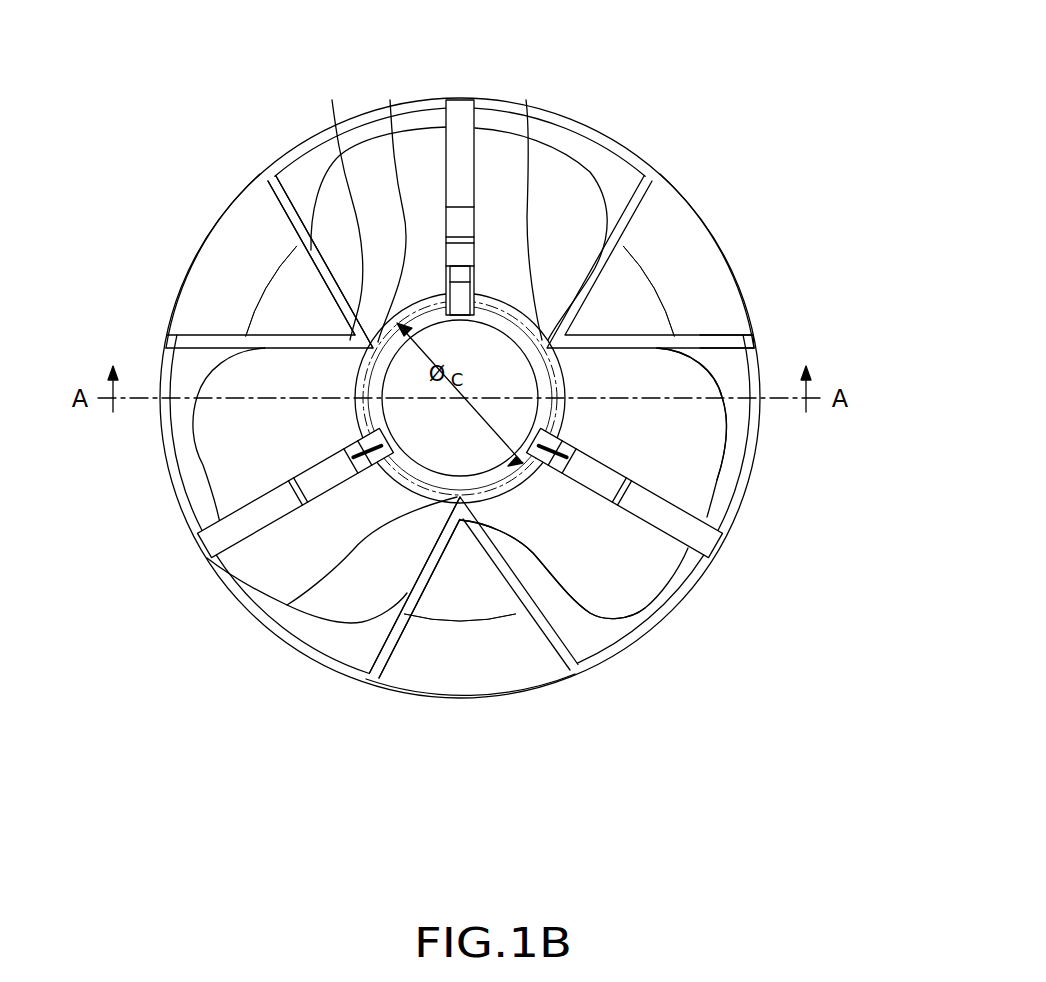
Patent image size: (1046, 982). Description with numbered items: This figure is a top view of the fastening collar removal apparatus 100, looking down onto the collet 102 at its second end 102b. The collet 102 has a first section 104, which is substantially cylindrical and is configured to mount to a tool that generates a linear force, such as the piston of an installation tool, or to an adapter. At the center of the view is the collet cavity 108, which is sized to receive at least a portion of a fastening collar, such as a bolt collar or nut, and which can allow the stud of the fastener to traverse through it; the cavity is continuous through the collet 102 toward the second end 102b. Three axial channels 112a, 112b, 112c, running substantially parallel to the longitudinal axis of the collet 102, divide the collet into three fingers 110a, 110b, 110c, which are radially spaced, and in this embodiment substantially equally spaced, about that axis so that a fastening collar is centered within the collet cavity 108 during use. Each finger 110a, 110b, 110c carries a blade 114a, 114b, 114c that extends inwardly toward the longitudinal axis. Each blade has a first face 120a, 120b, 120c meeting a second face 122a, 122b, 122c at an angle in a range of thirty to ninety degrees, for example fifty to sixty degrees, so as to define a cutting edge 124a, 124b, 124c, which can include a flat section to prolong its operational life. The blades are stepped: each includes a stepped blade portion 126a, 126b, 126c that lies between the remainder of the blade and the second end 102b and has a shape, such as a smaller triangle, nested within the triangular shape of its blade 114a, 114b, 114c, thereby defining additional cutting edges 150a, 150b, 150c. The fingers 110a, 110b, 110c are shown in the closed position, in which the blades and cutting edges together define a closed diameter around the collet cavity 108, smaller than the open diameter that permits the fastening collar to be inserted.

The fastening collar removal apparatus 100 is at (736, 61).
The collet 102 is at (735, 260).
The second end of the collet 102b is at (570, 112).
The first section 104 is at (745, 298).
The collet cavity 108 is at (423, 398).
The finger 110a is at (392, 676).
The finger 110b is at (200, 255).
The finger 110c is at (677, 222).
The axial channel 112a is at (220, 533).
The axial channel 112b is at (458, 100).
The axial channel 112c is at (700, 530).
The blade 114a is at (460, 570).
The blade 114b is at (287, 302).
The blade 114c is at (638, 293).
The first face 120a is at (513, 605).
The first face 120b is at (197, 340).
The first face 120c is at (640, 215).
The second face 122a is at (393, 622).
The second face 122b is at (292, 236).
The second face 122c is at (757, 338).
The cutting edge 124a is at (287, 605).
The cutting edge 124b is at (390, 100).
The cutting edge 124c is at (526, 100).
The stepped blade portion 126a is at (432, 658).
The stepped blade portion 126b is at (300, 283).
The stepped blade portion 126c is at (650, 253).
The cutting edge 150a is at (617, 621).
The cutting edge 150b is at (332, 100).
The cutting edge 150c is at (568, 340).